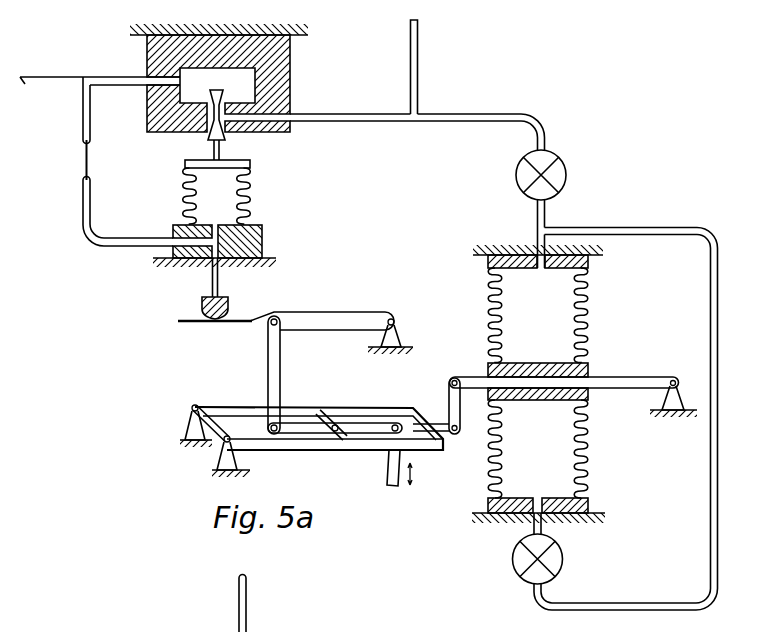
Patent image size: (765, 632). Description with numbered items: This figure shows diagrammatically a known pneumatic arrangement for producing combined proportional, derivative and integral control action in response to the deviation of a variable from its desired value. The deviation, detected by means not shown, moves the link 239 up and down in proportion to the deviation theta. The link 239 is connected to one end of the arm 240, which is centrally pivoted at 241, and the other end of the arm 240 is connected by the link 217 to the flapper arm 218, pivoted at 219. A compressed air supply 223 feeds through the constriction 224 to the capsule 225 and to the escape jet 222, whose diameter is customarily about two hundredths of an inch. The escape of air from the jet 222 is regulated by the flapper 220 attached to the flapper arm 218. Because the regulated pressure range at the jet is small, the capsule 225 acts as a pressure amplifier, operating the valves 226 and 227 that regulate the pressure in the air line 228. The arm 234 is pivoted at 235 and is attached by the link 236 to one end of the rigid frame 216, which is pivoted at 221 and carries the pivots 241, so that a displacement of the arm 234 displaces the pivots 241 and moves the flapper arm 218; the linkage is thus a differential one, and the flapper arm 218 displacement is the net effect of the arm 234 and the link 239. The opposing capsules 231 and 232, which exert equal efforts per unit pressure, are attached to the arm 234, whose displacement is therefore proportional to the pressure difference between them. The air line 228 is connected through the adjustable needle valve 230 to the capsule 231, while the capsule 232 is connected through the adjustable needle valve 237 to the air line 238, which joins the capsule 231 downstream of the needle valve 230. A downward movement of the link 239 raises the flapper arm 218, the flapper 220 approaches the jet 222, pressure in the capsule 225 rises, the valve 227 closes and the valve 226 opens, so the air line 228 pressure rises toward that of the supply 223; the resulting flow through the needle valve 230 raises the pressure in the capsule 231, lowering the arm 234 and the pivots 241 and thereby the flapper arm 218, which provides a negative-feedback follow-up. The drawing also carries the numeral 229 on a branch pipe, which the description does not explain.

The rigid frame 216 is at (305, 450).
The link 217 is at (277, 340).
The flapper arm 218 is at (357, 297).
The pivot 219 is at (396, 321).
The flapper 220 is at (185, 323).
The pivot 221 is at (192, 409).
The escape jet 222 is at (204, 302).
The compressed air supply 223 is at (25, 84).
The constriction 224 is at (84, 157).
The capsule 225 is at (222, 192).
The valve 226 is at (232, 78).
The valve 227 is at (225, 139).
The air line 228 is at (377, 121).
The conduit 229 is at (257, 631).
The adjustable needle valve 230 is at (556, 178).
The capsule 231 is at (502, 333).
The capsule 232 is at (497, 481).
The arm 234 is at (610, 382).
The pivot 235 is at (681, 372).
The link 236 is at (449, 418).
The adjustable needle valve 237 is at (549, 556).
The air line 238 is at (711, 496).
The link 239 is at (388, 466).
The arm 240 is at (353, 424).
The pivot 241 is at (334, 419).